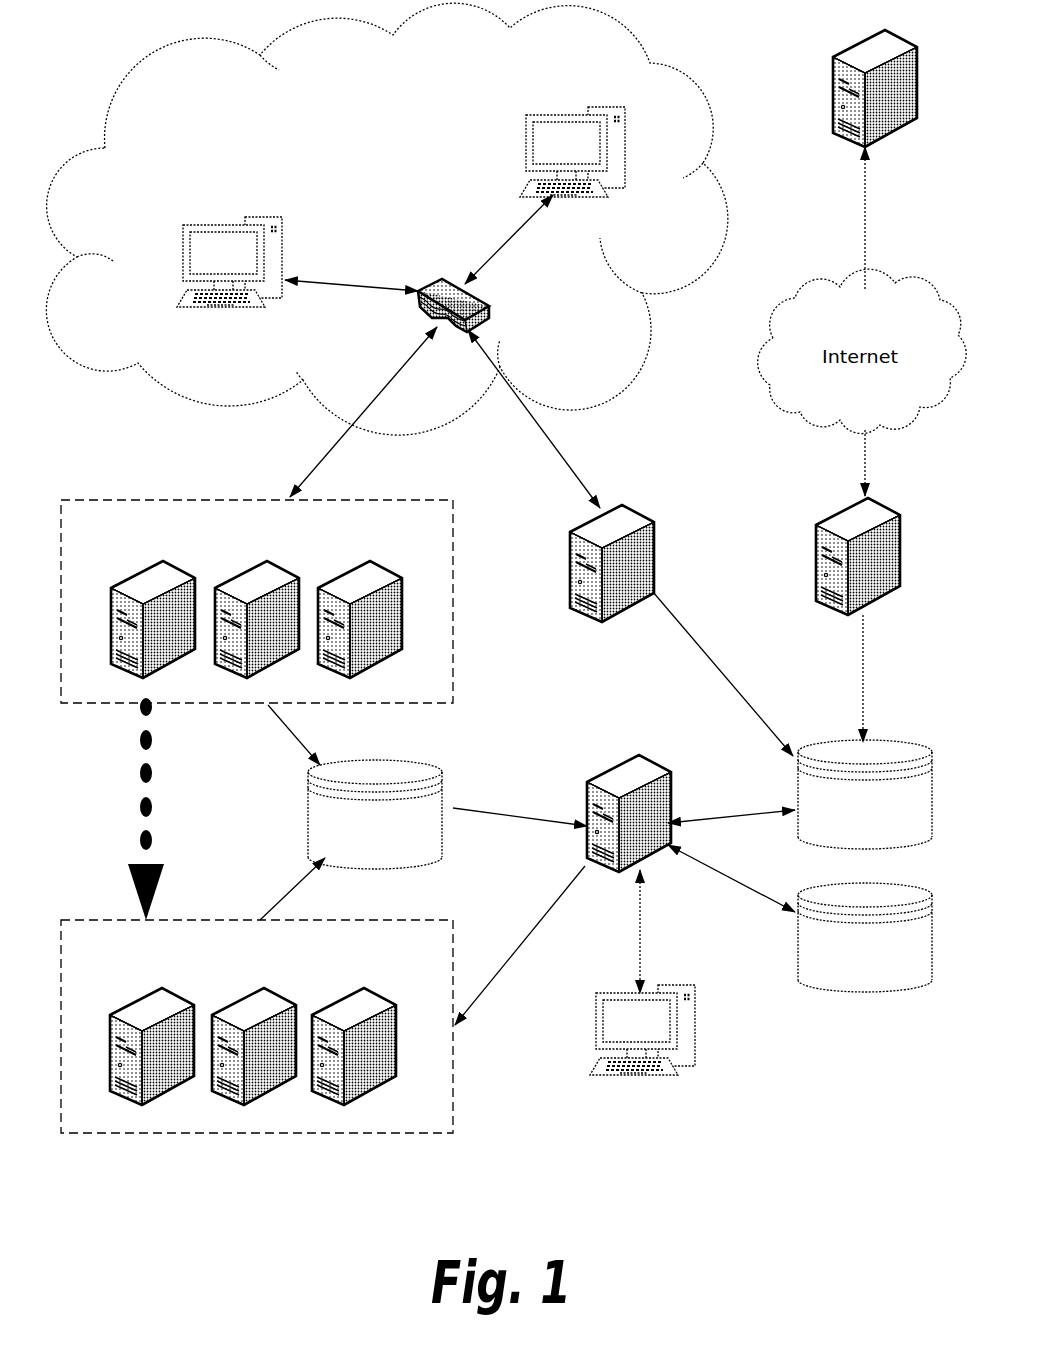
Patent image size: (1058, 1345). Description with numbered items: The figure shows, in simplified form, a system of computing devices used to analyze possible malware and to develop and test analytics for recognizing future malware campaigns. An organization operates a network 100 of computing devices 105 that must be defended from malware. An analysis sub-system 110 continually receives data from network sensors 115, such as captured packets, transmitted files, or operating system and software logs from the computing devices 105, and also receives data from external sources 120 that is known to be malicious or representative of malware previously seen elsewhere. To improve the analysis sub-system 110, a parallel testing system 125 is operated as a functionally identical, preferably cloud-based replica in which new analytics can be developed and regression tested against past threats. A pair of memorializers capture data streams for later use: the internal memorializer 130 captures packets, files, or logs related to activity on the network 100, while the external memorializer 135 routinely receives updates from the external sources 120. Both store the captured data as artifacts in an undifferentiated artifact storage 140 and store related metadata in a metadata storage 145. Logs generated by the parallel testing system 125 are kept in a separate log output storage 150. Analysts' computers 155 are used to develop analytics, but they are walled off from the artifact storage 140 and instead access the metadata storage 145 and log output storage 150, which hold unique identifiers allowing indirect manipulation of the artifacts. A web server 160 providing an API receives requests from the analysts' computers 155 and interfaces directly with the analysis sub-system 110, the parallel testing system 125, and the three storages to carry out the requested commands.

The network 100 is at (216, 83).
The computing devices 105 is at (241, 265).
The analysis sub-system 110 is at (105, 536).
The network sensors 115 is at (442, 279).
The external sources 120 is at (833, 60).
The parallel testing system 125 is at (105, 958).
The internal memorializer 130 is at (570, 535).
The external memorializer 135 is at (816, 528).
The artifact storage 140 is at (882, 835).
The metadata storage 145 is at (882, 981).
The log output storage 150 is at (394, 853).
The analysts' computers 155 is at (653, 1033).
The web server 160 is at (587, 785).